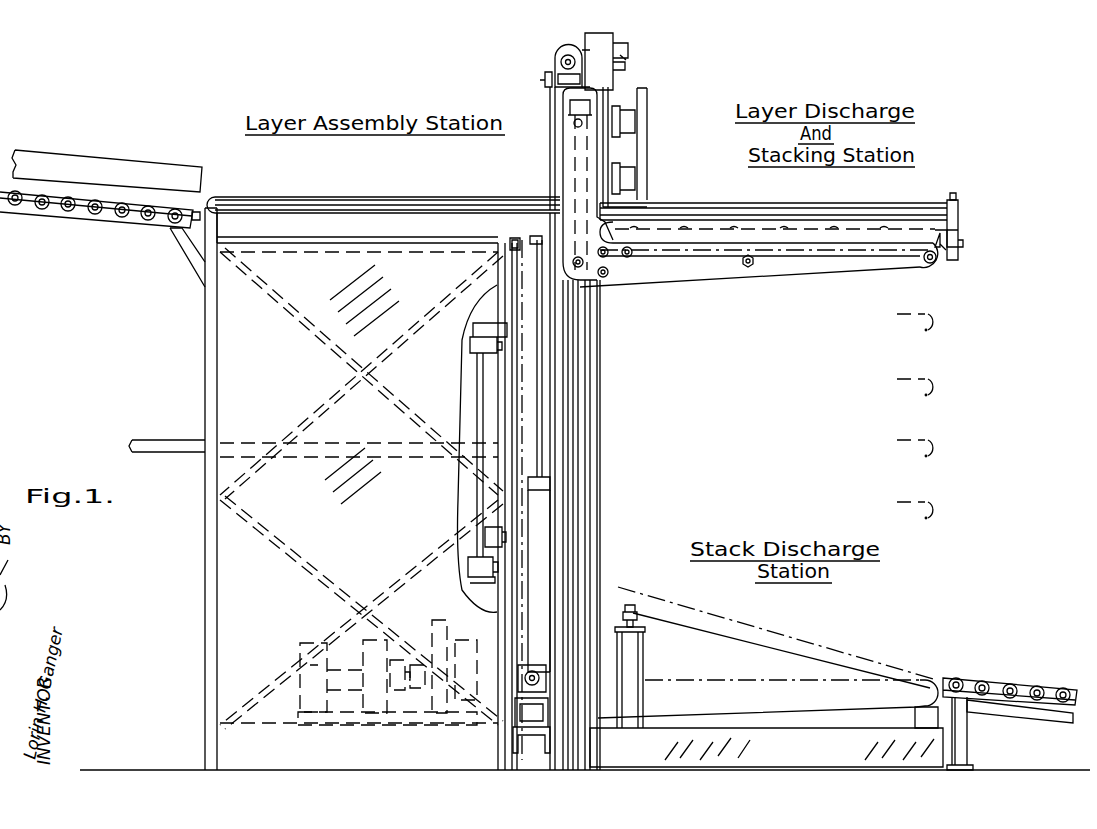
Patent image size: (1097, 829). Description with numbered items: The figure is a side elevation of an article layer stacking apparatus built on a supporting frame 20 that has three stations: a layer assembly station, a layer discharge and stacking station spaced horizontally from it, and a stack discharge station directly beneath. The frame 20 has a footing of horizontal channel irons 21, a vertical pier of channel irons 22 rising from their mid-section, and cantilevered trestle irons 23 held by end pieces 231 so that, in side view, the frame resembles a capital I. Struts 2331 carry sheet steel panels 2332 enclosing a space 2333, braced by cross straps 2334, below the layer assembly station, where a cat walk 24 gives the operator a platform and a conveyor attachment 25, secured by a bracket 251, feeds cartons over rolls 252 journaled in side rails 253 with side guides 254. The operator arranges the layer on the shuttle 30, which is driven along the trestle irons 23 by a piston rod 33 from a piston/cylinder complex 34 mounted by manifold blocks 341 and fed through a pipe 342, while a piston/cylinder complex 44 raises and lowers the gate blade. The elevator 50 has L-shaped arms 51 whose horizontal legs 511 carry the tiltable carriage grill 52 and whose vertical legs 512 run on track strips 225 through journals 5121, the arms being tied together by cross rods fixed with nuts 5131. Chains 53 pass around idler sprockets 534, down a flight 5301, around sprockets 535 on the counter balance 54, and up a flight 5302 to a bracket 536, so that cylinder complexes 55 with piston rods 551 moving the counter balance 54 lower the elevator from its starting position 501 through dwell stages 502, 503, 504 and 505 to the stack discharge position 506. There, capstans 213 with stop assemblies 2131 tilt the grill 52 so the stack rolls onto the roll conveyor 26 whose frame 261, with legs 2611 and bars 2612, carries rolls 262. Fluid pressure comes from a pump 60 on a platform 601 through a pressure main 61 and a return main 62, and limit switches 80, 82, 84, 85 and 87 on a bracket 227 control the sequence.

The supporting frame 20 is at (601, 362).
The channel irons 21 is at (640, 745).
The channel irons 22 is at (598, 437).
The channel irons 23 is at (362, 228).
The cat walk 24 is at (165, 440).
The conveyor attachment 25 is at (102, 198).
The roll conveyor 26 is at (1010, 691).
The shuttle 30 is at (322, 197).
The piston rod 33 is at (433, 207).
The piston/cylinder complex 34 is at (740, 204).
The piston/cylinder complex 44 is at (606, 82).
The elevator 50 is at (882, 259).
The L-shaped arms 51 is at (688, 262).
The carriage or grill 52 is at (798, 230).
The transmission sprocket chain 53 is at (562, 47).
The counter balance 54 is at (550, 496).
The cylinder and piston complexes 55 is at (540, 538).
The pump 60 is at (445, 650).
The pressure main pipe line 61 is at (455, 640).
The return main pipe line 62 is at (467, 660).
The dual limit switch 80 is at (637, 124).
The dual limit switch 82 is at (637, 182).
The limit switch 84 is at (470, 346).
The limit switch 85 is at (485, 535).
The limit switch 87 is at (468, 568).
The capstans 213 is at (645, 652).
The track strips 225 is at (590, 488).
The bracket 227 is at (477, 382).
The end pieces 231 is at (200, 215).
The bracket 251 is at (190, 252).
The conveyor rolls 252 is at (67, 211).
The side rails 253 is at (108, 214).
The side guides 254 is at (112, 174).
The frame 261 is at (993, 690).
The rolls 262 is at (1010, 690).
The manifold blocks 341 is at (959, 211).
The pipe 342 is at (953, 195).
The starting position 501 is at (950, 262).
The stage 502 is at (948, 322).
The stage 503 is at (948, 387).
The stage 504 is at (948, 448).
The stage 505 is at (948, 510).
The stack discharge position 506 is at (918, 680).
The leg 511 is at (787, 262).
The leg 512 is at (572, 160).
The idler sprocket 534 is at (556, 62).
The idler sprocket 535 is at (513, 693).
The bracket 536 is at (510, 241).
The piston rod 551 is at (540, 398).
The platform 601 is at (373, 718).
The threaded bolt and lock nut assembly 2131 is at (700, 628).
The struts 2331 is at (505, 257).
The sheet steel panels 2332 is at (217, 375).
The space 2333 is at (497, 306).
The cross straps or braces 2334 is at (305, 398).
The legs 2611 is at (968, 737).
The side and intermediate bars 2612 is at (1048, 700).
The journals 5121 is at (576, 121).
The nuts 5131 is at (749, 268).
The downward flight 5301 is at (547, 80).
The upward flight 5302 is at (510, 670).